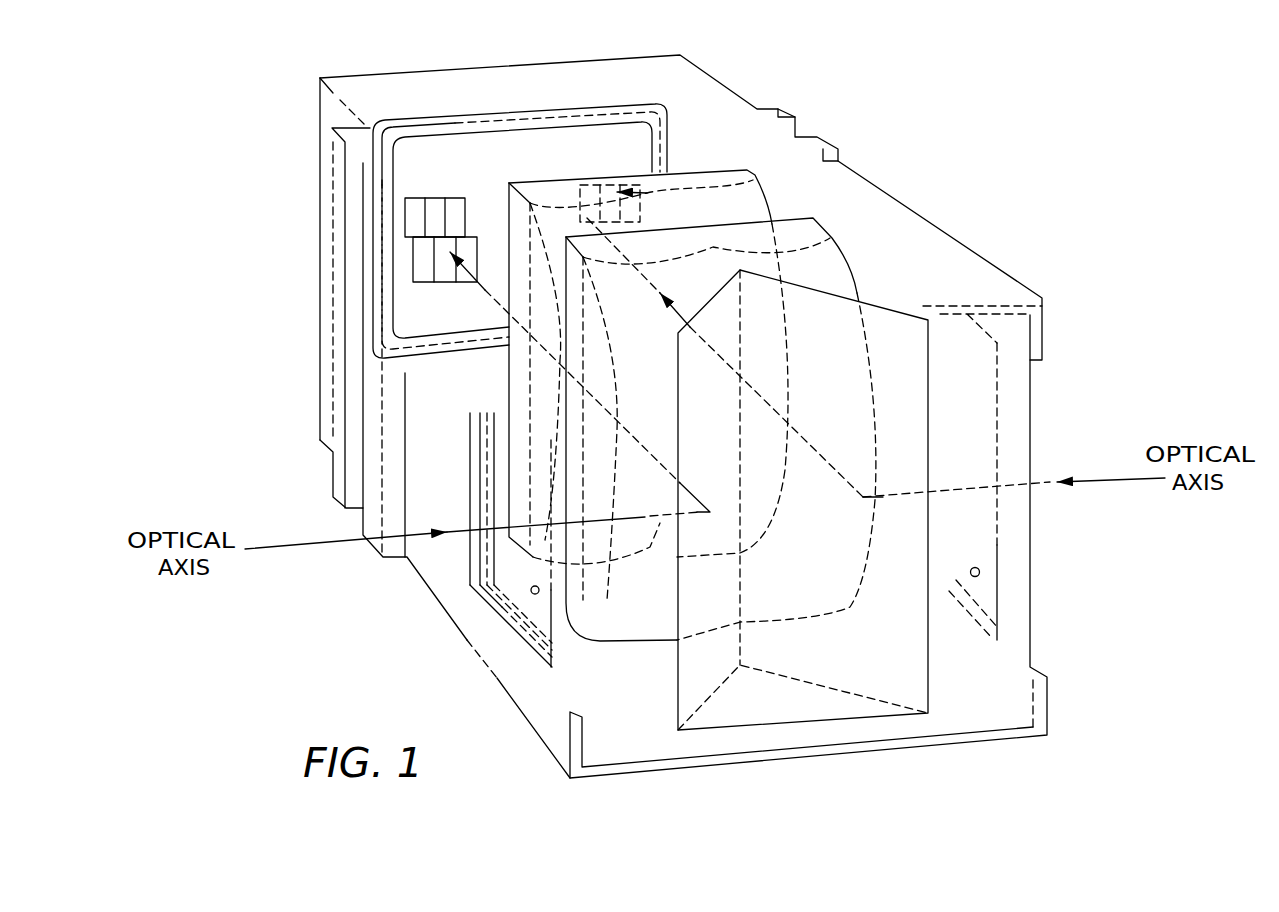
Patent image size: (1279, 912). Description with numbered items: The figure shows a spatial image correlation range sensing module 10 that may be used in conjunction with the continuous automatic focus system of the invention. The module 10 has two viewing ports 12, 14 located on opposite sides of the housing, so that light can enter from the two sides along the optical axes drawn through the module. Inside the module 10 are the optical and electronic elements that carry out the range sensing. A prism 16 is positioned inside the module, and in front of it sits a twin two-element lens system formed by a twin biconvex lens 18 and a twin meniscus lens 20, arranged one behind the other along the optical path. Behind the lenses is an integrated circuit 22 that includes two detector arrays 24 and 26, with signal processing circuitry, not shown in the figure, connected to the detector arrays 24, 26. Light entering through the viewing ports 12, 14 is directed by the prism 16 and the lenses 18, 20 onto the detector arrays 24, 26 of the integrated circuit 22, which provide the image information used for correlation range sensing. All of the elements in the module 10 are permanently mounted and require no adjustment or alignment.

The module 10 is at (300, 264).
The viewing port 12 is at (980, 572).
The viewing port 14 is at (532, 592).
The prism 16 is at (896, 306).
The twin biconvex lens 18 is at (826, 222).
The twin meniscus lens 20 is at (749, 166).
The integrated circuit 22 is at (481, 100).
The detector array 24 is at (597, 186).
The detector array 26 is at (423, 198).